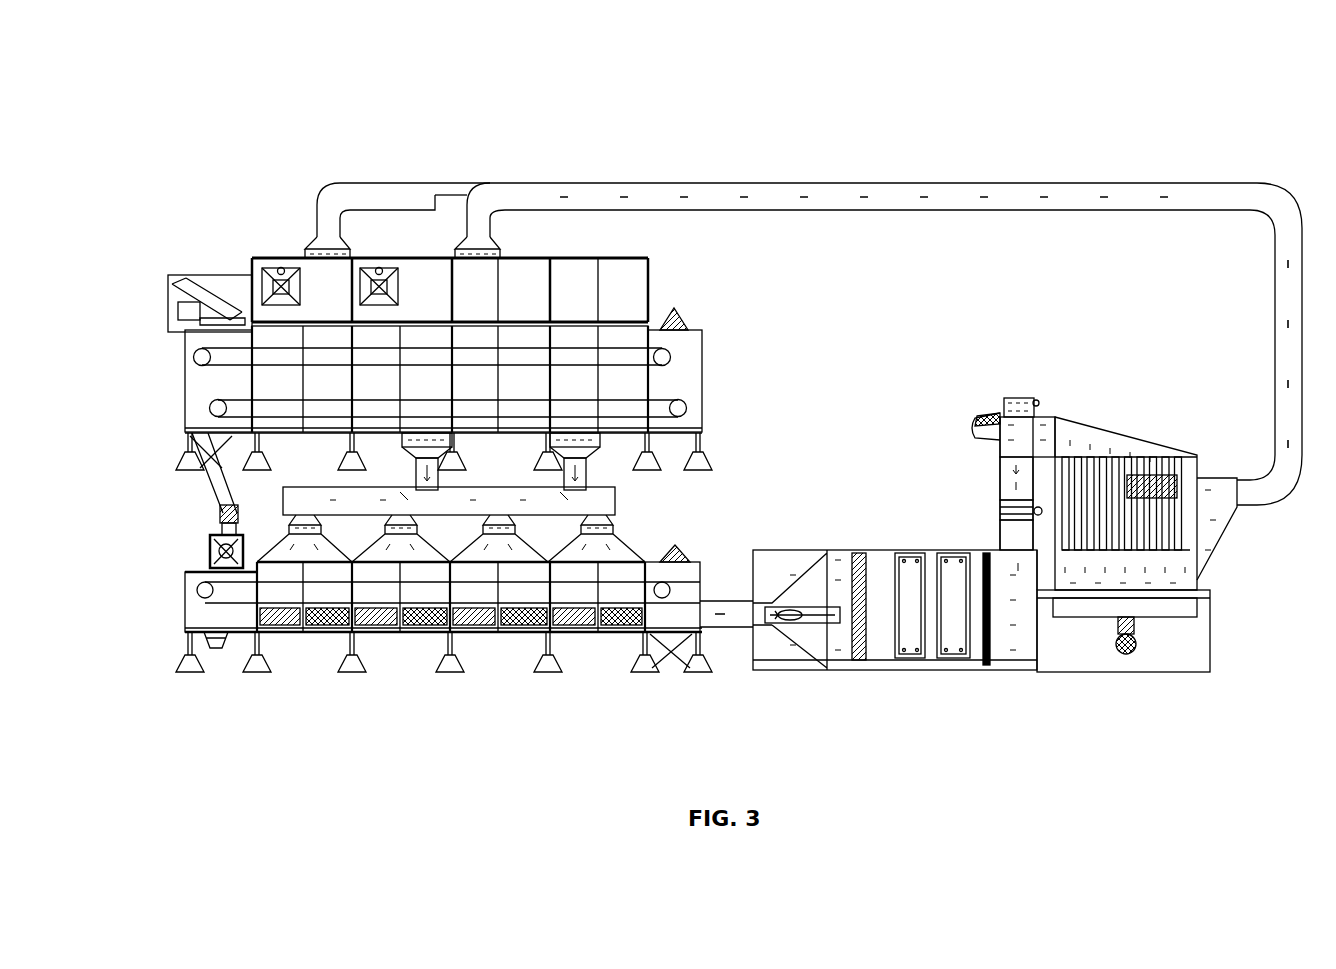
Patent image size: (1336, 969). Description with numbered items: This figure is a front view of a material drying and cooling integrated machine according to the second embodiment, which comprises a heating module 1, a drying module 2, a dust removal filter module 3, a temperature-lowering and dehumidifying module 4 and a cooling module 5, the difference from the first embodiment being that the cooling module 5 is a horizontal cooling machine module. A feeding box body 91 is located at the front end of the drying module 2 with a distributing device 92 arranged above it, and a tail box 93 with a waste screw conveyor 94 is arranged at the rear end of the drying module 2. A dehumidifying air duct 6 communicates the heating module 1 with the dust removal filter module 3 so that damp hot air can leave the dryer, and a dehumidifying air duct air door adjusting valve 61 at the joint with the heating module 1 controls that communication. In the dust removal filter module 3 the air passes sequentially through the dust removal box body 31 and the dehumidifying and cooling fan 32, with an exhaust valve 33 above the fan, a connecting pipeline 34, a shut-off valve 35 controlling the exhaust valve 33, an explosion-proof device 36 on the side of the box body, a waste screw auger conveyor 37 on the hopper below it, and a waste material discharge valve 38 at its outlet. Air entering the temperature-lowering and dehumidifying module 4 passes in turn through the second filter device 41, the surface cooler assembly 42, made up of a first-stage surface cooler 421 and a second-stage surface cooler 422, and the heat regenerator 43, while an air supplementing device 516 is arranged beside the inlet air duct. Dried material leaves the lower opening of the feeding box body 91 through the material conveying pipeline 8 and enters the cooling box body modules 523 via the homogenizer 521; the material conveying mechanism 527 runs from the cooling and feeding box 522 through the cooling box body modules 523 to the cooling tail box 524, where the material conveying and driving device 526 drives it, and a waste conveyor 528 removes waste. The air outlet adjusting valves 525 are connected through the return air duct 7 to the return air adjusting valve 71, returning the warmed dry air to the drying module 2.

The heating module 1 is at (435, 355).
The drying module 2 is at (295, 338).
The dust removal filter module 3 is at (1089, 530).
The temperature-lowering and dehumidifying module 4 is at (908, 651).
The cooling module 5 is at (433, 609).
The dehumidifying air duct 6 is at (870, 207).
The return air duct 7 is at (610, 502).
The material conveying pipeline 8 is at (215, 478).
The dust removal box body 31 is at (1165, 462).
The dehumidifying and cooling fan 32 is at (980, 418).
The exhaust valve 33 is at (1030, 400).
The connecting pipeline 34 is at (1008, 468).
The shut-off valve 35 is at (1000, 510).
The explosion-proof device 36 is at (1205, 478).
The waste screw auger conveyor 37 is at (1150, 618).
The waste material discharge valve 38 is at (1130, 650).
The second filter device 41 is at (988, 655).
The surface cooler assembly 42 is at (981, 668).
The heat regenerator 43 is at (860, 665).
The dehumidifying air duct air door adjusting valve 61 is at (505, 255).
The return air adjusting valve 71 is at (440, 445).
The feeding box body 91 is at (195, 388).
The distributing device 92 is at (222, 300).
The tail box 93 is at (680, 385).
The waste screw conveyor 94 is at (690, 440).
The first-stage surface cooler 421 is at (948, 660).
The second-stage surface cooler 422 is at (920, 660).
The air supplementing device 516 is at (830, 610).
The homogenizer 521 is at (215, 548).
The cooling and feeding box 522 is at (215, 570).
The cooling box body modules 523 is at (383, 630).
The cooling tail box 524 is at (700, 580).
The air outlet adjusting valves 525 is at (452, 630).
The material conveying and driving device 526 is at (675, 548).
The material conveying mechanism 527 is at (665, 595).
The waste conveyor 528 is at (212, 640).